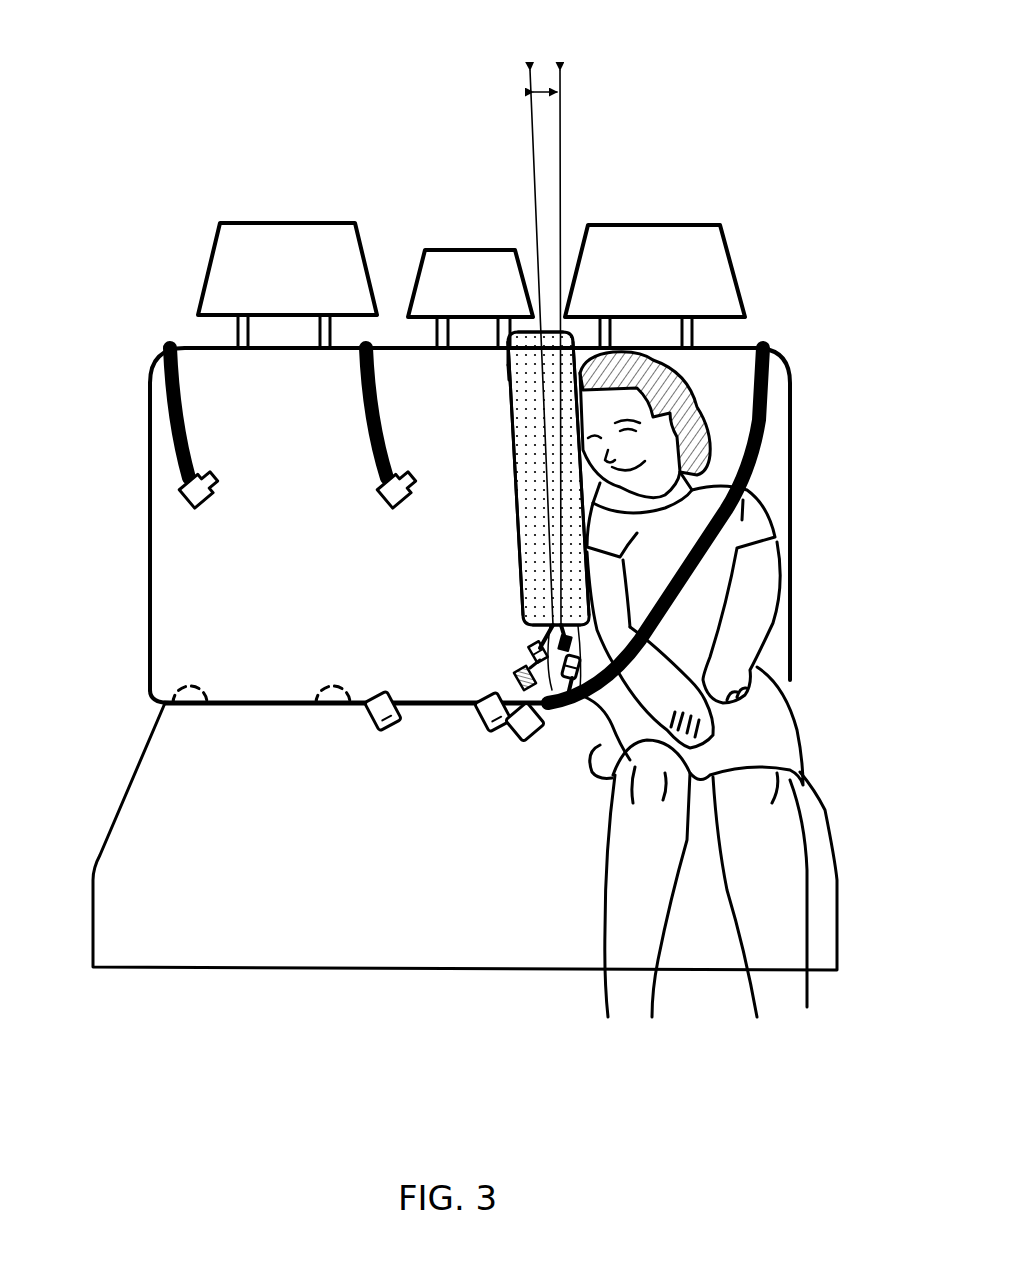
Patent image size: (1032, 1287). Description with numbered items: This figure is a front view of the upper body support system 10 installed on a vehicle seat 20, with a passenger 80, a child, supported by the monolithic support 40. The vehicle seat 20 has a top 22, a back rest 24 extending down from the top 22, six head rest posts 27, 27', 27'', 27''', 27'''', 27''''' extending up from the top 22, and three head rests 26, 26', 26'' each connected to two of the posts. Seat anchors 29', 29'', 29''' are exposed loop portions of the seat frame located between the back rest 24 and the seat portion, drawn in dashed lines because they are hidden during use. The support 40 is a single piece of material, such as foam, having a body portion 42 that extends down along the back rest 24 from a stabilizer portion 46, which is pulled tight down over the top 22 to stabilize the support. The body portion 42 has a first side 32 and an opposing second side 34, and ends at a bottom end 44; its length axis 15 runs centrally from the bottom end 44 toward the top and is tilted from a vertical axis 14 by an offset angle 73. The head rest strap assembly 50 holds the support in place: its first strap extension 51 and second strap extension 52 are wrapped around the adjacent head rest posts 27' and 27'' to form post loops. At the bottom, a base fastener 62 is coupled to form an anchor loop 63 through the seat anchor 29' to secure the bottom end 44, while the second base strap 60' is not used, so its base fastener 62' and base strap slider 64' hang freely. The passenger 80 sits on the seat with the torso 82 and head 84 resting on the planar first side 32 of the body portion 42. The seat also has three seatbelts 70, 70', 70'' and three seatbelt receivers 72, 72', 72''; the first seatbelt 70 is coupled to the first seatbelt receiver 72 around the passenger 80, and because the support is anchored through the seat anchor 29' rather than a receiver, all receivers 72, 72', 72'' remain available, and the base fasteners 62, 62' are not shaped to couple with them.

The upper body support system 10 is at (262, 173).
The vertical axis 14 is at (560, 118).
The length axis 15 is at (530, 115).
The vehicle seat 20 is at (162, 410).
The top 22 is at (762, 348).
The back rest 24 is at (763, 458).
The head rest 26 is at (655, 229).
The head rest 26' is at (470, 226).
The head rest 26'' is at (287, 232).
The head rest post 27 is at (736, 301).
The head rest post 27' is at (639, 296).
The head rest post 27'' is at (465, 315).
The head rest post 27''' is at (373, 310).
The head rest post 27'''' is at (272, 372).
The head rest post 27''''' is at (178, 331).
The seat anchor 29' is at (465, 792).
The seat anchor 29'' is at (308, 667).
The seat anchor 29''' is at (222, 660).
The first side 32 is at (600, 493).
The second side 34 is at (525, 445).
The support 40 is at (530, 552).
The body portion 42 is at (522, 466).
The bottom end 44 is at (522, 612).
The stabilizer portion 46 is at (515, 325).
The head rest strap assembly 50 is at (505, 365).
The first strap extension 51 is at (580, 335).
The second strap extension 52 is at (508, 378).
The base strap 60' is at (464, 645).
The base fastener 62 is at (594, 683).
The base fastener 62' is at (486, 683).
The anchor loop 63 is at (545, 720).
The base strap slider 64' is at (490, 651).
The seatbelt 70 is at (718, 521).
The seatbelt 70' is at (367, 428).
The seatbelt 70'' is at (150, 439).
The seatbelt receiver 72 is at (501, 756).
The seatbelt receiver 72' is at (456, 731).
The seatbelt receiver 72'' is at (337, 735).
The offset angle 73 is at (543, 84).
The passenger 80 is at (763, 533).
The torso 82 is at (727, 590).
The head 84 is at (660, 388).